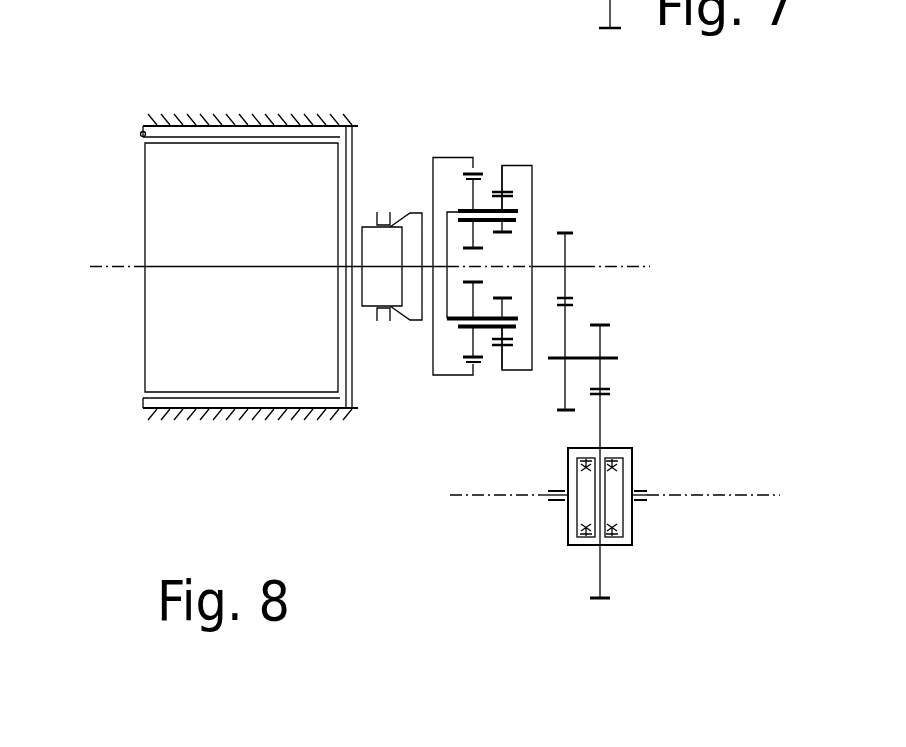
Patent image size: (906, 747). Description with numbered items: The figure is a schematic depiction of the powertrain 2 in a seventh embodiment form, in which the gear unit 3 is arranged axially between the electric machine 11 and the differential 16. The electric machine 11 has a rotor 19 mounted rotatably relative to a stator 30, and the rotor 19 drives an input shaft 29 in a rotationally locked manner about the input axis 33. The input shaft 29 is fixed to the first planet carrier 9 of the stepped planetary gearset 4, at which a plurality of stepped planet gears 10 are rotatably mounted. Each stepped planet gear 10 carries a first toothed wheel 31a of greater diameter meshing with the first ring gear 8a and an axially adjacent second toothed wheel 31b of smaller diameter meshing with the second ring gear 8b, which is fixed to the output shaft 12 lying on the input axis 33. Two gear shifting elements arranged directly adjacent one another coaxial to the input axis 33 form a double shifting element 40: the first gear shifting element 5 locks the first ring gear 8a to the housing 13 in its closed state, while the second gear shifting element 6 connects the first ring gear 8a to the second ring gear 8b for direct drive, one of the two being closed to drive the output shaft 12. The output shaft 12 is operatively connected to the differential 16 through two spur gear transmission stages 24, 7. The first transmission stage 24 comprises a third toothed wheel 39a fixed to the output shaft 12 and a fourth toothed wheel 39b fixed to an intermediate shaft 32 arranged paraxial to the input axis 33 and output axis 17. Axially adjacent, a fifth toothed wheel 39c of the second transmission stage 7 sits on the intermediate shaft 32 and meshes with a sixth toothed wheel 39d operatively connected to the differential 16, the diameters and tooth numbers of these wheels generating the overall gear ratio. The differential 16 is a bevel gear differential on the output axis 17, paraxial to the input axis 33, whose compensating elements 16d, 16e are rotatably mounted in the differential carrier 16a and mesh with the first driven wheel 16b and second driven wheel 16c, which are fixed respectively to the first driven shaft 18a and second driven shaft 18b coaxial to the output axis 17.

The powertrain 2 is at (125, 75).
The gear unit 3 is at (458, 420).
The stepped planetary gearset 4 is at (492, 165).
The first gear shifting element 5 is at (380, 210).
The second gear shifting element 6 is at (396, 210).
The second transmission stage 7 is at (643, 397).
The first ring gear 8a is at (482, 170).
The second ring gear 8b is at (504, 168).
The first planet carrier 9 is at (449, 322).
The stepped planet gear 10 is at (487, 332).
The electric machine 11 is at (143, 412).
The output shaft 12 is at (540, 262).
The housing 13 is at (178, 115).
The differential 16 is at (562, 552).
The differential carrier 16a is at (572, 448).
The first driven wheel 16b is at (570, 477).
The second driven wheel 16c is at (625, 518).
The compensating element 16d is at (610, 458).
The compensating element 16e is at (612, 538).
The output axis 17 is at (465, 498).
The first driven shaft 18a is at (545, 496).
The second driven shaft 18b is at (648, 493).
The rotor 19 is at (163, 185).
The first transmission stage 24 is at (595, 245).
The input shaft 29 is at (347, 125).
The stator 30 is at (143, 134).
The first toothed wheel 31a is at (468, 178).
The second toothed wheel 31b is at (513, 200).
The intermediate shaft 32 is at (618, 358).
The input axis 33 is at (125, 268).
The third toothed wheel 39a is at (567, 233).
The fourth toothed wheel 39b is at (575, 305).
The fifth toothed wheel 39c is at (606, 327).
The sixth toothed wheel 39d is at (606, 395).
The double shifting element 40 is at (387, 332).